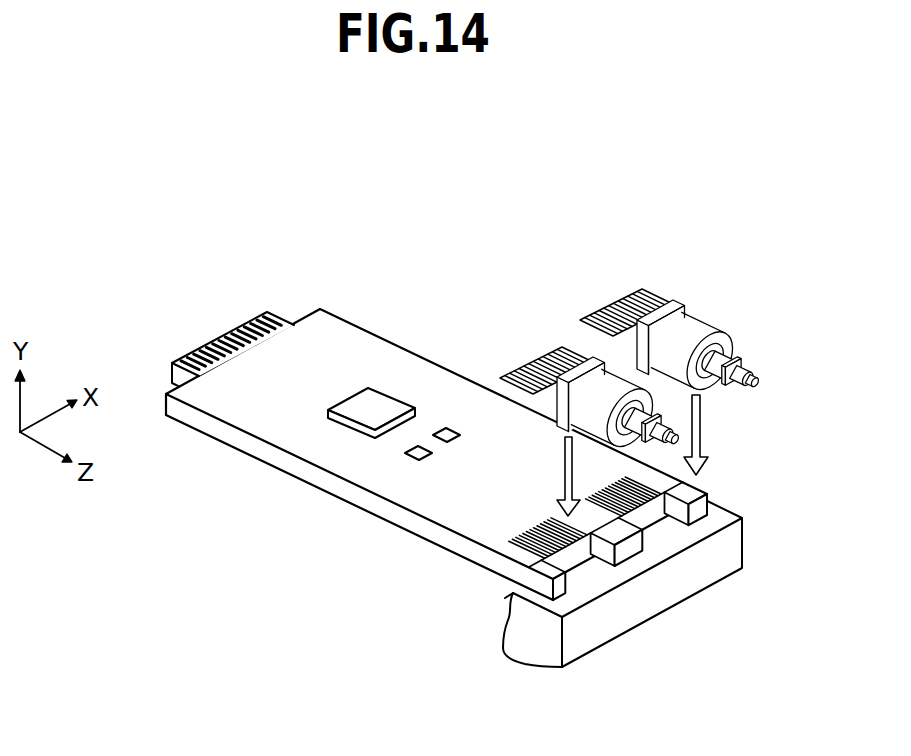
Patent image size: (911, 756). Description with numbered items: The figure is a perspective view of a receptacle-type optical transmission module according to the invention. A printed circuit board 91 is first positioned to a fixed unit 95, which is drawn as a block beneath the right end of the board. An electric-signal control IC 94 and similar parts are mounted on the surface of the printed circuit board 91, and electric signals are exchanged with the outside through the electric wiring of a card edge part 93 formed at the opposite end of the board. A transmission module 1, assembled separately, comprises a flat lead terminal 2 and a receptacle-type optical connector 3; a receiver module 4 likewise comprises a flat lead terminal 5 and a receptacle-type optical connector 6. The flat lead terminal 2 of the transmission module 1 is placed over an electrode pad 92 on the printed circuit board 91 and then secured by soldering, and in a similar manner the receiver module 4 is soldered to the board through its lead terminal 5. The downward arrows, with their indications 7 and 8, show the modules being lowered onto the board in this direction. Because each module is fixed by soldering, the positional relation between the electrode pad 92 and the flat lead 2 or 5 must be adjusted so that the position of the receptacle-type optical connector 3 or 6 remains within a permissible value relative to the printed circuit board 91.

The transmission module 1 is at (572, 367).
The flat lead terminal 2 is at (522, 365).
The receptacle-type optical connector 3 is at (705, 440).
The receiver module 4 is at (698, 306).
The flat lead terminal 5 is at (623, 320).
The receptacle-type optical connector 6 is at (745, 301).
The mounting direction arrow 7 is at (464, 580).
The board edge contact recess 8 is at (712, 596).
The printed circuit board 91 is at (303, 330).
The electrode pad 92 is at (506, 620).
The card edge part 93 is at (147, 360).
The electric-signal control IC 94 is at (377, 397).
The fixed unit 95 is at (640, 603).